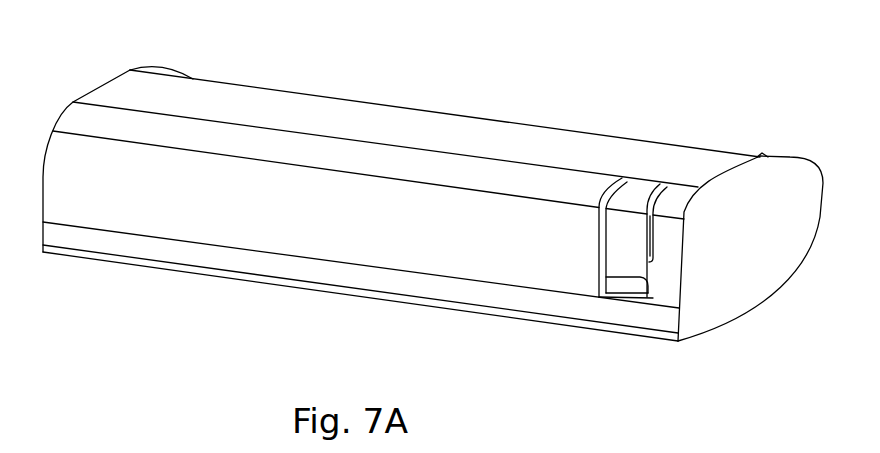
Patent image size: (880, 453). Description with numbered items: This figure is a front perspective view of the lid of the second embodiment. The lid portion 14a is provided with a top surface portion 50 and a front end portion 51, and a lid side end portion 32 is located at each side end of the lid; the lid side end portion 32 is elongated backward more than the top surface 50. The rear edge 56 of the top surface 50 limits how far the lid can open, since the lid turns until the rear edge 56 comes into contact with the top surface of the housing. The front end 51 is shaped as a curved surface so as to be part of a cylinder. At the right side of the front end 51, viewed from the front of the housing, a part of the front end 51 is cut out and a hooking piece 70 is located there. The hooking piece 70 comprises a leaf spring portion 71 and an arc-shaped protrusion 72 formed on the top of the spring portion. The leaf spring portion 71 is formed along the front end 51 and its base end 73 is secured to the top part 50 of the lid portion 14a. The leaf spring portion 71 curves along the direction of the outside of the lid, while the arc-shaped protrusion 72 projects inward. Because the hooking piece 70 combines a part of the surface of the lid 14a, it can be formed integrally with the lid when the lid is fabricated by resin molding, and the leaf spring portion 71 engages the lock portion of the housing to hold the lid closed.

The lid portion 14a is at (257, 97).
The top surface portion 50 is at (395, 127).
The front end portion 51 is at (277, 237).
The rear edge 56 is at (547, 127).
The lid side end portion 32 is at (732, 297).
The hooking piece 70 is at (611, 271).
The leaf spring portion 71 is at (607, 253).
The arc-shaped protrusion 72 is at (627, 294).
The base end 73 is at (642, 180).